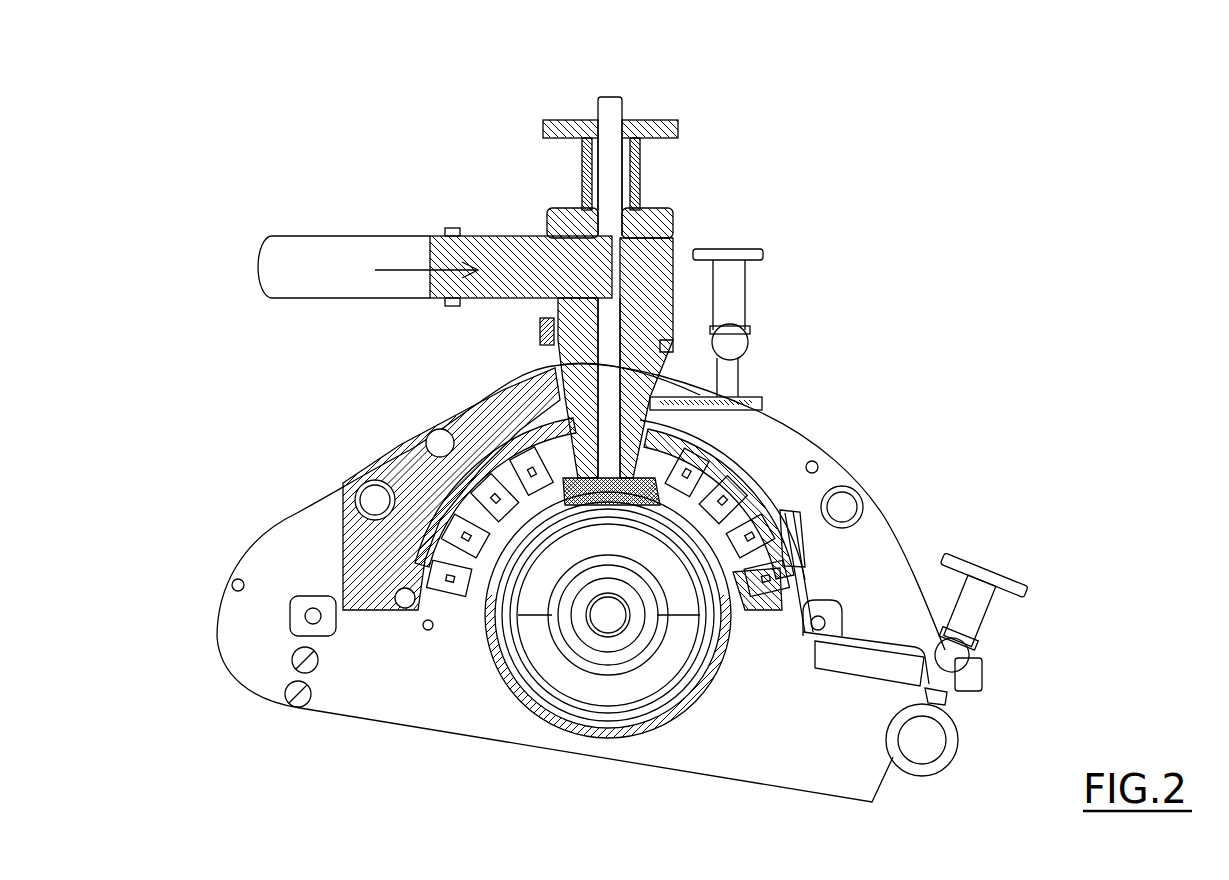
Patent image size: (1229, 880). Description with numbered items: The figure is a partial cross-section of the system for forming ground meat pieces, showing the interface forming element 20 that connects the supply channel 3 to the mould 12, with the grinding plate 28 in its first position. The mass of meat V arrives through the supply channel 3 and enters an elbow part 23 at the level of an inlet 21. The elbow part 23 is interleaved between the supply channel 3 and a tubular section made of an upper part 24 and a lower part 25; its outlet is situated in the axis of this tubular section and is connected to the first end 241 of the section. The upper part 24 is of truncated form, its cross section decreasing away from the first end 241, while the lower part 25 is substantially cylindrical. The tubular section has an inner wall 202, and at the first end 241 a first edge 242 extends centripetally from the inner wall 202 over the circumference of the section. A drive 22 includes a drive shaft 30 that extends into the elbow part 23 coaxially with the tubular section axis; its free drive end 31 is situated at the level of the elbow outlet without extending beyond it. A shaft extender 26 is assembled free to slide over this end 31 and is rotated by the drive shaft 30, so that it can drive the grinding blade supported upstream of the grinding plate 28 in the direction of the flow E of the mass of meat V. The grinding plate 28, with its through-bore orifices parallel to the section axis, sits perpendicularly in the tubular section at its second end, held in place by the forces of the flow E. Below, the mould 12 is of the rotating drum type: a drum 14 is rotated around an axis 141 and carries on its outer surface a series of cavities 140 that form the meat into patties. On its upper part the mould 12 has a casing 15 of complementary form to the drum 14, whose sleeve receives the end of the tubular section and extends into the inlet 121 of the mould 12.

The supply channel 3 is at (352, 257).
The flow of the mass of meat E is at (400, 265).
The mass of meat V is at (500, 258).
The mould 12 is at (873, 515).
The drum 14 is at (545, 710).
The casing 15 is at (767, 582).
The interface forming element 20 is at (660, 125).
The inlet 21 is at (452, 228).
The drive 22 is at (636, 186).
The elbow part 23 is at (676, 236).
The upper part of the tubular section 24 is at (565, 357).
The lower part of the tubular section 25 is at (545, 425).
The shaft extender 26 is at (665, 382).
The grinding plate 28 is at (630, 490).
The drive shaft 30 is at (607, 110).
The free drive end 31 is at (667, 345).
The inlet of the mould 121 is at (545, 433).
The cavities 140 is at (612, 727).
The axis 141 is at (597, 615).
The inner wall 202 is at (580, 387).
The first end 241 is at (545, 337).
The first edge 242 is at (690, 350).